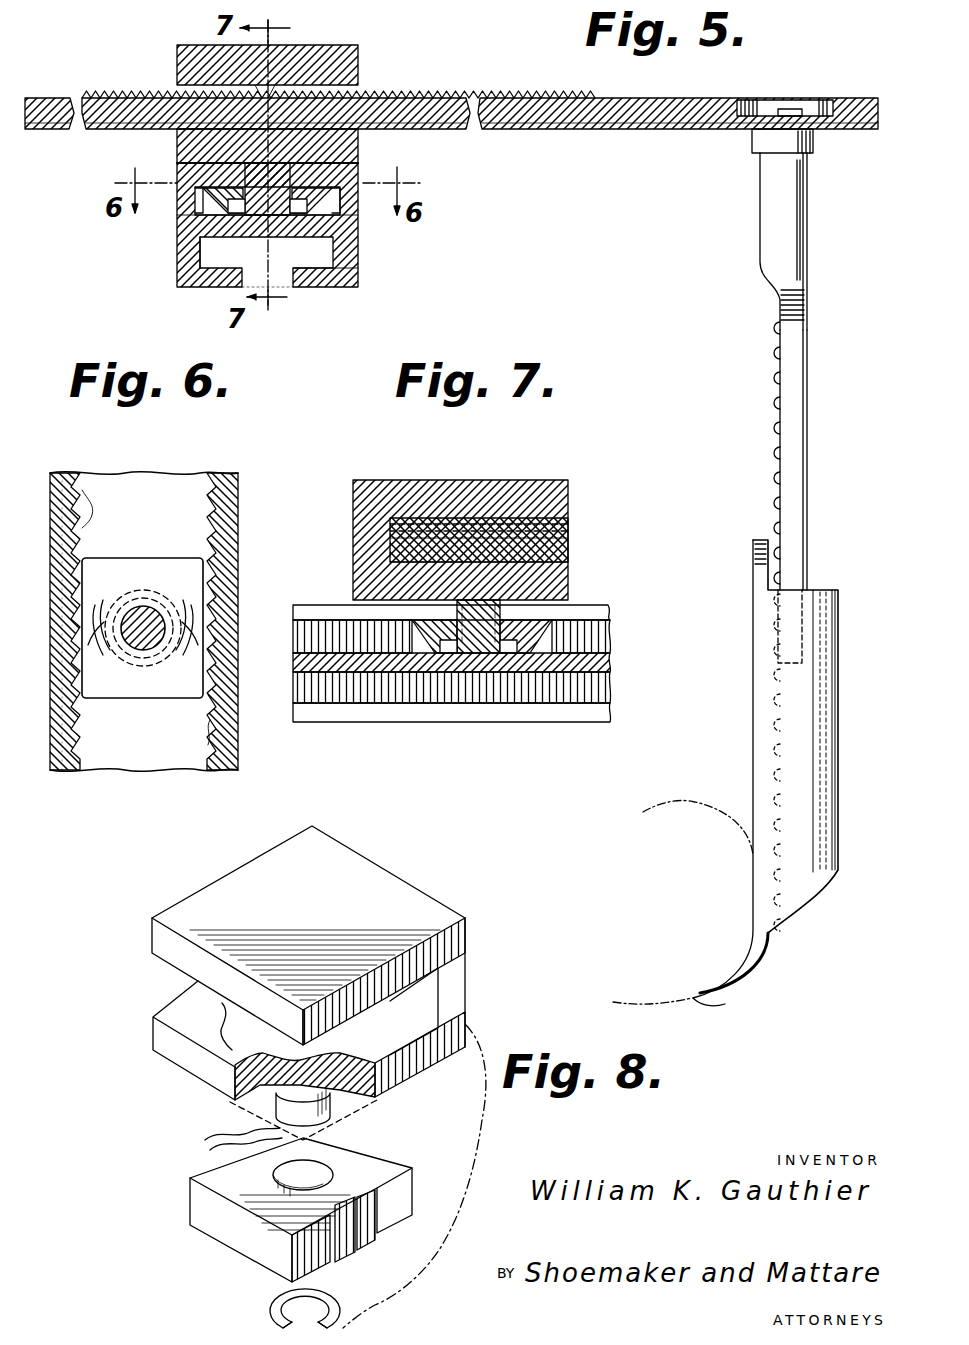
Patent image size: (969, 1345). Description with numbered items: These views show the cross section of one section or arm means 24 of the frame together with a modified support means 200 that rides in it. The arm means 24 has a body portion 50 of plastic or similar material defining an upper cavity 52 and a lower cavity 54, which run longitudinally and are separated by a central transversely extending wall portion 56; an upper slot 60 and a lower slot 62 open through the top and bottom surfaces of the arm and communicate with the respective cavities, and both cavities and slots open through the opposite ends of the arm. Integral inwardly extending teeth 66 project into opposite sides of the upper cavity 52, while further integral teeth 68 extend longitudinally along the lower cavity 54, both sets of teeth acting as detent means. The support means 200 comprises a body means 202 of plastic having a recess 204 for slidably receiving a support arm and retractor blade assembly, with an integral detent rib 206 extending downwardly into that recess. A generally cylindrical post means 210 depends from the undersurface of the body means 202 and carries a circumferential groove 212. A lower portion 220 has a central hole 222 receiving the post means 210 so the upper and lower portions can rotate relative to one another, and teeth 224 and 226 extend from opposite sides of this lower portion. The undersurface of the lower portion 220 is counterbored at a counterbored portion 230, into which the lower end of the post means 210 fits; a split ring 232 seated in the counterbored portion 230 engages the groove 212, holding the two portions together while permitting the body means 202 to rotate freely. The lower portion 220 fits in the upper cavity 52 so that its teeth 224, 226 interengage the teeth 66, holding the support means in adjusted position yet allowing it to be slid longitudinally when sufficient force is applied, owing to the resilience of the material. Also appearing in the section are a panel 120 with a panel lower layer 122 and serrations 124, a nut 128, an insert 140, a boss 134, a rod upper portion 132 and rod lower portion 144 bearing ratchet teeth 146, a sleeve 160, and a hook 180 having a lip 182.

In FIG. 5, the arm means 24 is at (250, 242).
In FIG. 6, the arm means 24 is at (171, 642).
In FIG. 7, the arm means 24 is at (475, 674).
In FIG. 5, the body portion 50 is at (355, 260).
In FIG. 6, the body portion 50 is at (240, 517).
In FIG. 5, the upper cavity 52 is at (347, 220).
In FIG. 6, the upper cavity 52 is at (113, 740).
In FIG. 5, the lower cavity 54 is at (354, 273).
In FIG. 7, the lower cavity 54 is at (346, 704).
In FIG. 5, the central transversely extending wall portion 56 is at (234, 239).
In FIG. 7, the central transversely extending wall portion 56 is at (606, 666).
In FIG. 5, the upper slot 60 is at (255, 165).
In FIG. 7, the upper slot 60 is at (599, 612).
In FIG. 5, the lower slot 62 is at (283, 289).
In FIG. 7, the lower slot 62 is at (598, 713).
In FIG. 5, the teeth 66 is at (195, 190).
In FIG. 6, the teeth 66 is at (82, 512).
In FIG. 7, the teeth 66 is at (606, 638).
In FIG. 5, the teeth 68 is at (198, 256).
In FIG. 5, the support means 200 is at (308, 116).
In FIG. 7, the support means 200 is at (471, 541).
In FIG. 8, the support means 200 is at (309, 963).
In FIG. 7, the body means 202 is at (355, 507).
In FIG. 8, the body means 202 is at (203, 900).
In FIG. 5, the recess 204 is at (360, 86).
In FIG. 7, the recess 204 is at (568, 558).
In FIG. 8, the recess 204 is at (178, 1020).
In FIG. 5, the detent rib 206 is at (272, 95).
In FIG. 7, the detent rib 206 is at (568, 534).
In FIG. 8, the detent rib 206 is at (240, 1029).
In FIG. 6, the post means 210 is at (141, 608).
In FIG. 7, the post means 210 is at (462, 614).
In FIG. 8, the post means 210 is at (335, 1068).
In FIG. 8, the groove 212 is at (276, 1097).
In FIG. 6, the lower portion 220 is at (140, 564).
In FIG. 7, the lower portion 220 is at (420, 636).
In FIG. 8, the lower portion 220 is at (212, 1215).
In FIG. 8, the central hole 222 is at (320, 1165).
In FIG. 6, the teeth 224 is at (111, 646).
In FIG. 8, the teeth 224 is at (221, 1141).
In FIG. 6, the teeth 226 is at (184, 643).
In FIG. 8, the teeth 226 is at (355, 1252).
In FIG. 7, the counterbored portion 230 is at (532, 637).
In FIG. 7, the split ring 232 is at (450, 706).
In FIG. 8, the split ring 232 is at (278, 1300).
In FIG. 5, the panel 120 is at (585, 130).
In FIG. 5, the panel lower layer 122 is at (636, 130).
In FIG. 7, the panel lower layer 122 is at (392, 542).
In FIG. 5, the serrations 124 is at (551, 93).
In FIG. 5, the nut 128 is at (743, 100).
In FIG. 5, the insert 140 is at (800, 100).
In FIG. 5, the boss 134 is at (813, 145).
In FIG. 5, the rod upper portion 132 is at (800, 226).
In FIG. 5, the rod lower portion 144 is at (795, 420).
In FIG. 5, the ratchet teeth 146 is at (773, 432).
In FIG. 5, the sleeve 160 is at (752, 665).
In FIG. 5, the hook 180 is at (738, 982).
In FIG. 5, the lip 182 is at (705, 1003).